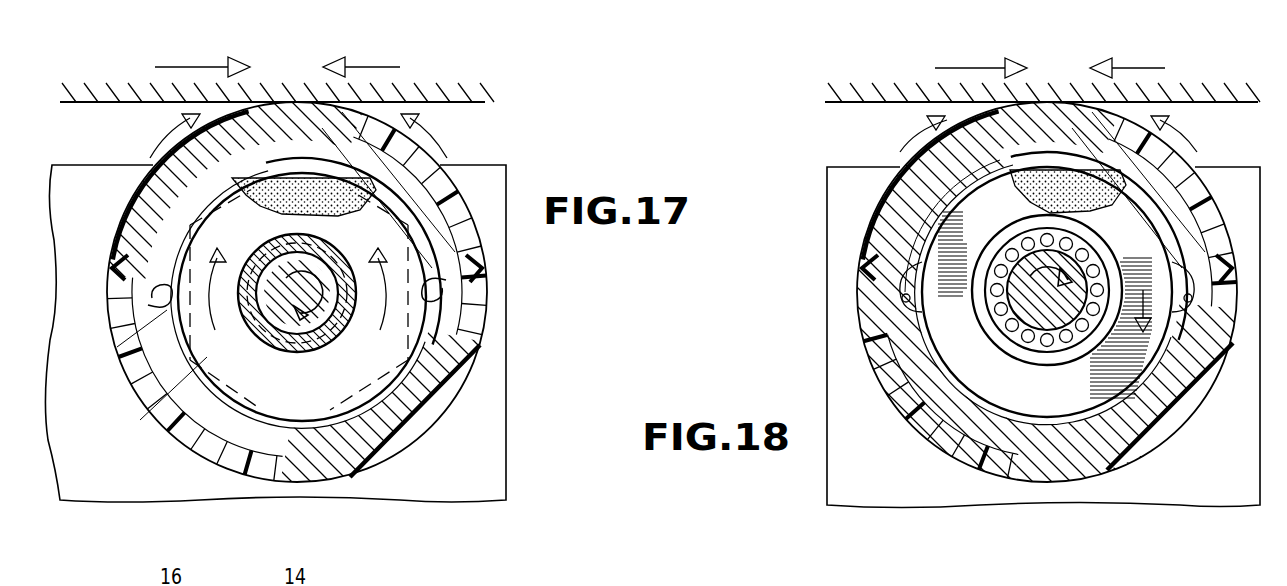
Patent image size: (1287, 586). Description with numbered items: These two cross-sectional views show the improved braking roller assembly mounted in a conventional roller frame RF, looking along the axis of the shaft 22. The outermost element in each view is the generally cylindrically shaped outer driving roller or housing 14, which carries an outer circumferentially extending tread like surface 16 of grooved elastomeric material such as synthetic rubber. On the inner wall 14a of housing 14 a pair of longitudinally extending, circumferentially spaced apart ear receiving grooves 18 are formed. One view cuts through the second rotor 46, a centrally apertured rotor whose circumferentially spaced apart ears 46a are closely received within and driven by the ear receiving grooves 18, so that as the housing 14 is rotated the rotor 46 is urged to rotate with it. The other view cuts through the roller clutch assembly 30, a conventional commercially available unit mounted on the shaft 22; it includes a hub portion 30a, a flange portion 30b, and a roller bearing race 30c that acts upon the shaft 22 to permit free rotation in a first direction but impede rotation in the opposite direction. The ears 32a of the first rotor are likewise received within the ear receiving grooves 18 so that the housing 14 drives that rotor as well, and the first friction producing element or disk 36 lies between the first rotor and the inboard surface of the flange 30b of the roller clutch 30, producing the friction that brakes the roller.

In FIG. 17, the outer driving roller or housing 14 is at (178, 207).
In FIG. 18, the outer driving roller or housing 14 is at (905, 243).
In FIG. 17, the inner wall of housing 14a is at (213, 390).
In FIG. 18, the inner wall of housing 14a is at (970, 397).
In FIG. 17, the tread like surface 16 is at (470, 347).
In FIG. 18, the tread like surface 16 is at (878, 357).
In FIG. 17, the ear receiving grooves 18 is at (138, 267).
In FIG. 18, the ear receiving grooves 18 is at (905, 298).
In FIG. 17, the shaft 22 is at (297, 318).
In FIG. 18, the shaft 22 is at (1033, 300).
In FIG. 17, the roller clutch assembly 30 is at (388, 418).
In FIG. 18, the roller clutch assembly 30 is at (892, 398).
In FIG. 18, the hub portion 30a is at (1047, 357).
In FIG. 18, the flange portion 30b is at (905, 207).
In FIG. 18, the roller bearing race 30c is at (1007, 258).
In FIG. 18, the ears 32a is at (905, 283).
In FIG. 18, the first friction producing element or disk 36 is at (1097, 193).
In FIG. 17, the second rotor 46 is at (213, 385).
In FIG. 17, the ears 46a is at (166, 310).
In FIG. 17, the roller frame RF is at (506, 468).
In FIG. 18, the roller frame RF is at (1030, 492).